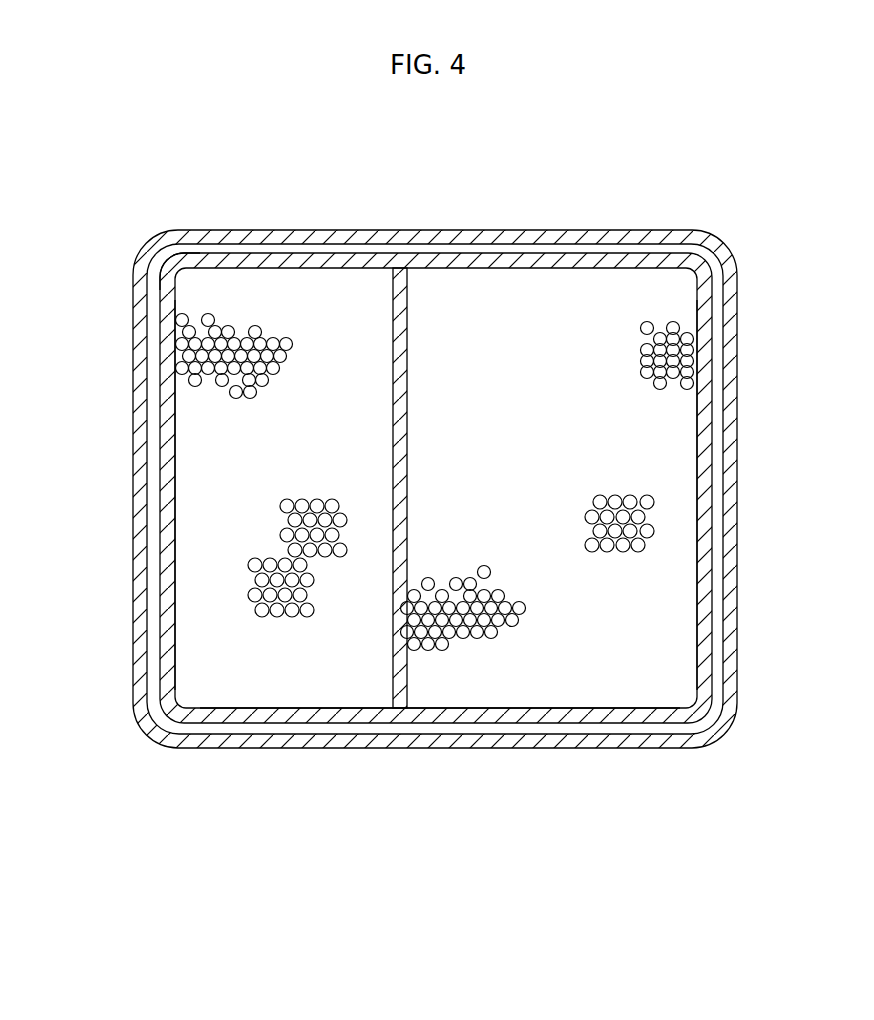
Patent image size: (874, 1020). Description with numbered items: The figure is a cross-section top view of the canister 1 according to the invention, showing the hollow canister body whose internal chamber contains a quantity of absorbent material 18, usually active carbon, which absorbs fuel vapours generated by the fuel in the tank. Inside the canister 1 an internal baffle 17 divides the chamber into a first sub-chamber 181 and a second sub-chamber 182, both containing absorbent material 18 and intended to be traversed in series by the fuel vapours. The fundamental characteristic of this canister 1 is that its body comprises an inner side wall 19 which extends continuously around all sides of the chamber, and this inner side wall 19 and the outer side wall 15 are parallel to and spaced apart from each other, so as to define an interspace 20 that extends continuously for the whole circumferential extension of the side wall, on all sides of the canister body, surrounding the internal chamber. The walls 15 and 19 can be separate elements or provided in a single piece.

The canister 1 is at (778, 622).
The outer side wall 15 is at (677, 230).
The internal baffle 17 is at (408, 325).
The absorbent material 18 is at (667, 298).
The first sub-chamber 181 is at (697, 490).
The second sub-chamber 182 is at (176, 474).
The inner side wall 19 is at (578, 707).
The interspace 20 is at (163, 252).